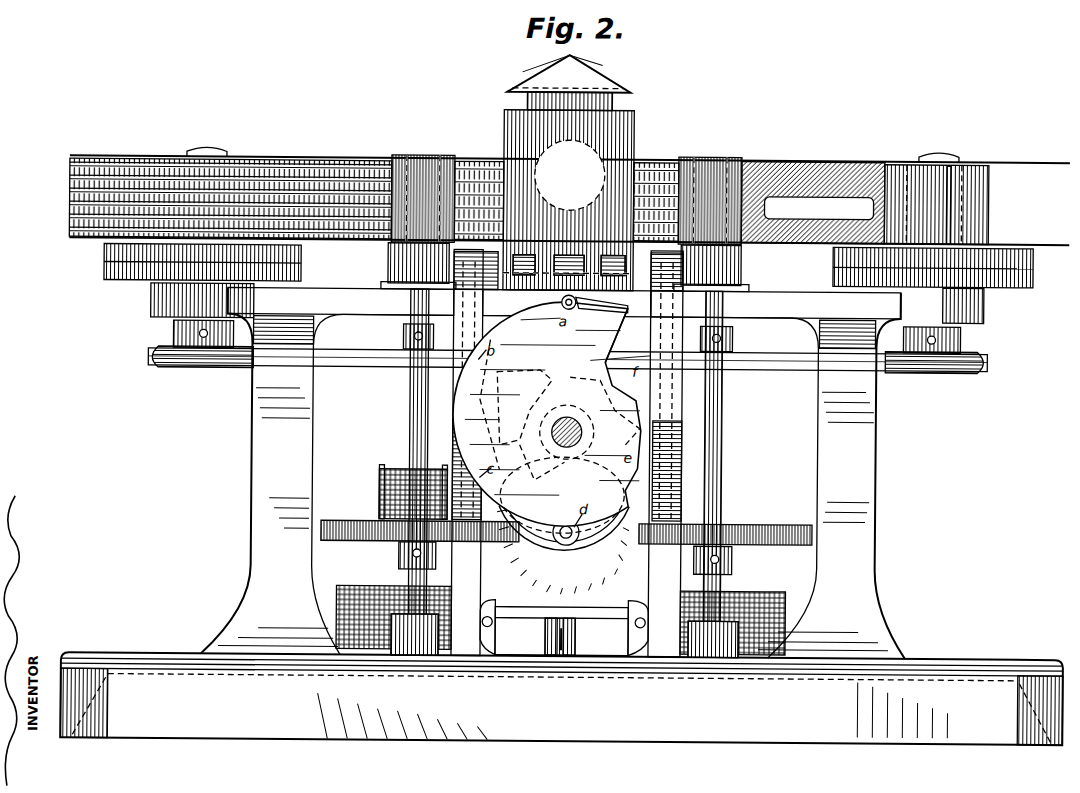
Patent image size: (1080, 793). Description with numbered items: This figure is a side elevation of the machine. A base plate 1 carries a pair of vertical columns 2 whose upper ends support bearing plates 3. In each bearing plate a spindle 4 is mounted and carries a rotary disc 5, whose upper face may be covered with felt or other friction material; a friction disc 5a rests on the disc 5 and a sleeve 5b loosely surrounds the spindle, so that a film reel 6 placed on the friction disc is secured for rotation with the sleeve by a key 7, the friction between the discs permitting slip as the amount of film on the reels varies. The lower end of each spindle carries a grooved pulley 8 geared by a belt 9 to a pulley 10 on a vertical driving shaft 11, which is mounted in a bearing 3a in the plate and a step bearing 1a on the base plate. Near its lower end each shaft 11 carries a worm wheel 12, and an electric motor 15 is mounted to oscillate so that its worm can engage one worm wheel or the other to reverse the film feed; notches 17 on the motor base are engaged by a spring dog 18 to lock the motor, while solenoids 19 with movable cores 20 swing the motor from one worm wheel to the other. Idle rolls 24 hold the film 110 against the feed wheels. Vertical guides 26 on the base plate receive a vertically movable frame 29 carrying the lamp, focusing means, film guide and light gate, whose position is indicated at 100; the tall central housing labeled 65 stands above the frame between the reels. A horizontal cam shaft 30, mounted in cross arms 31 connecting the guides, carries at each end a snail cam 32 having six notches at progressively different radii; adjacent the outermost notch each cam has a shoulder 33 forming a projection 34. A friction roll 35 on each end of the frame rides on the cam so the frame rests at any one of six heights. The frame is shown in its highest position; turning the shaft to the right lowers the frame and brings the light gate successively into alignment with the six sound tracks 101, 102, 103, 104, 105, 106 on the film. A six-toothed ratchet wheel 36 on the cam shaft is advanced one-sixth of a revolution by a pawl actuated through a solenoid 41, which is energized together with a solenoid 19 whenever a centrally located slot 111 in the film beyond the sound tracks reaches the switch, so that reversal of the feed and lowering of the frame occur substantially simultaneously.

The base plate 1 is at (985, 665).
The step bearing 1a is at (410, 655).
The vertical support or column 2 is at (252, 462).
The bearing plate 3 is at (150, 300).
The bearing 3a is at (387, 268).
The spindle 4 is at (205, 152).
The rotary disc 5 is at (115, 270).
The friction disc 5a is at (115, 250).
The sleeve 5b is at (960, 212).
The film reel 6 is at (274, 158).
The key 7 is at (950, 165).
The driving member 8 is at (195, 370).
The belt 9 is at (340, 367).
The driving member or pulley 10 is at (403, 348).
The vertical driving shaft 11 is at (410, 408).
The worm wheel 12 is at (352, 542).
The electric motor 15 is at (562, 548).
The notch or recess 17 is at (547, 632).
The spring dog 18 is at (590, 623).
The solenoid 19 is at (372, 590).
The movable core 20 is at (492, 610).
The idle roll 24 is at (400, 165).
The vertical guide 26 is at (456, 430).
The vertically movable frame 29 is at (530, 318).
The cam shaft 30 is at (582, 432).
The cross arm 31 is at (500, 410).
The cam 32 is at (581, 361).
The shoulder 33 is at (602, 309).
The projection 34 is at (624, 336).
The friction roll 35 is at (567, 295).
The ratchet wheel 36 is at (556, 380).
The solenoid 41 is at (393, 470).
The column 65 is at (632, 150).
The light gate position 100 is at (568, 140).
The sound track 101 is at (68, 166).
The sound track 102 is at (68, 179).
The sound track 103 is at (68, 192).
The sound track 104 is at (68, 205).
The sound track 105 is at (68, 218).
The sound track 106 is at (68, 231).
The film 110 is at (352, 162).
The slot 111 is at (800, 200).